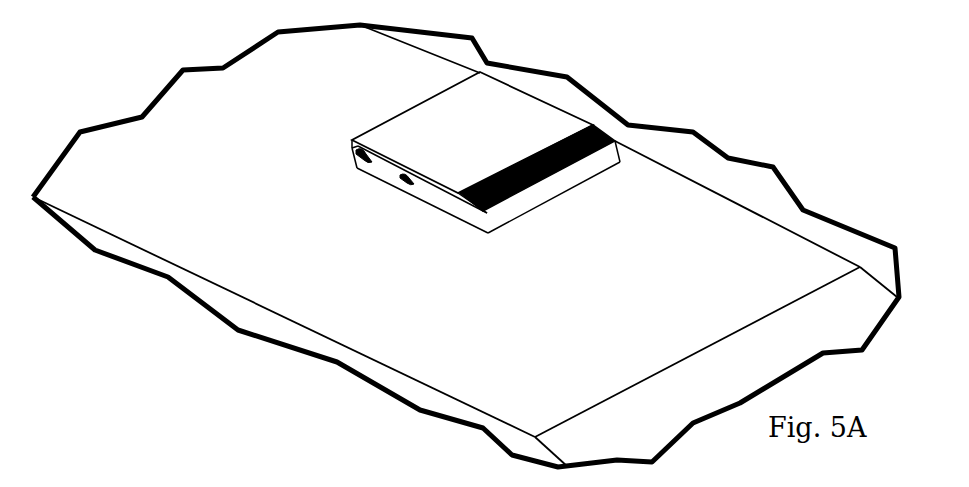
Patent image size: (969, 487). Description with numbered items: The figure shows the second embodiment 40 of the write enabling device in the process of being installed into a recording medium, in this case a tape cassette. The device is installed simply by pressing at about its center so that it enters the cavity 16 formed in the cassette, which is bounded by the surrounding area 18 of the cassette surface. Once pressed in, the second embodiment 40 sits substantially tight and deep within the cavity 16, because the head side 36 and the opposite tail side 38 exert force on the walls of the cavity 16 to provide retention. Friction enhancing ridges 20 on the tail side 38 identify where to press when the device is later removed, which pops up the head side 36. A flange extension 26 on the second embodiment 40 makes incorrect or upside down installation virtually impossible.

The cavity 16 is at (636, 118).
The surrounding area 18 is at (440, 30).
The friction enhancing ridges 20 is at (598, 122).
The flange extension 26 is at (355, 148).
The head side 36 is at (390, 176).
The tail side 38 is at (478, 232).
The second embodiment 40 is at (500, 48).